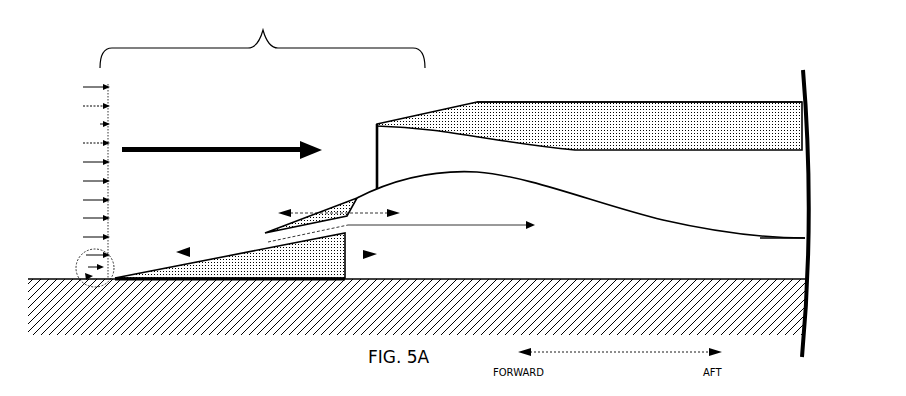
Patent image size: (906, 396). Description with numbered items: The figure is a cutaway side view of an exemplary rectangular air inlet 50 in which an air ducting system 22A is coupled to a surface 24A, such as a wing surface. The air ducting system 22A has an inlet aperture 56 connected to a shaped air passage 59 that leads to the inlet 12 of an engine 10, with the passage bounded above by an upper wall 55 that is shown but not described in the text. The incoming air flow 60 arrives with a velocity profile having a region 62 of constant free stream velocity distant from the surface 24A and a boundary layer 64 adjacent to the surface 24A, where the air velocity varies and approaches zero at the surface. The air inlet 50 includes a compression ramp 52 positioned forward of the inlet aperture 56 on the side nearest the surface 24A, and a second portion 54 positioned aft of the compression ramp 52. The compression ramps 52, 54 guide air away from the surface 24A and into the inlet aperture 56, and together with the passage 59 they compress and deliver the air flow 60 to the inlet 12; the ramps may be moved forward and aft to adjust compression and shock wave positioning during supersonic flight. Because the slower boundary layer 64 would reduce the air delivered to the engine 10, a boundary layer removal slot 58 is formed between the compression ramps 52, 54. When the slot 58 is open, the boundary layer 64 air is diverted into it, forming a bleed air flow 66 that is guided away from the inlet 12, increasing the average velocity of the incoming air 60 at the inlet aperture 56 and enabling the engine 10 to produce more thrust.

The engine 10 is at (798, 198).
The inlet 12 is at (796, 230).
The air ducting system 22A is at (556, 55).
The surface 24A is at (56, 276).
The rectangular air inlet 50 is at (262, 38).
The compression ramp 52 is at (265, 300).
The second portion of the compression ramp 54 is at (345, 212).
The upper inlet wall 55 is at (447, 115).
The inlet aperture 56 is at (383, 152).
The boundary layer removal slot 58 is at (250, 233).
The shaped air passage 59 is at (581, 201).
The incoming air flow 60 is at (147, 146).
The free stream region 62 is at (83, 176).
The boundary layer 64 is at (84, 262).
The bleed air flow 66 is at (411, 221).